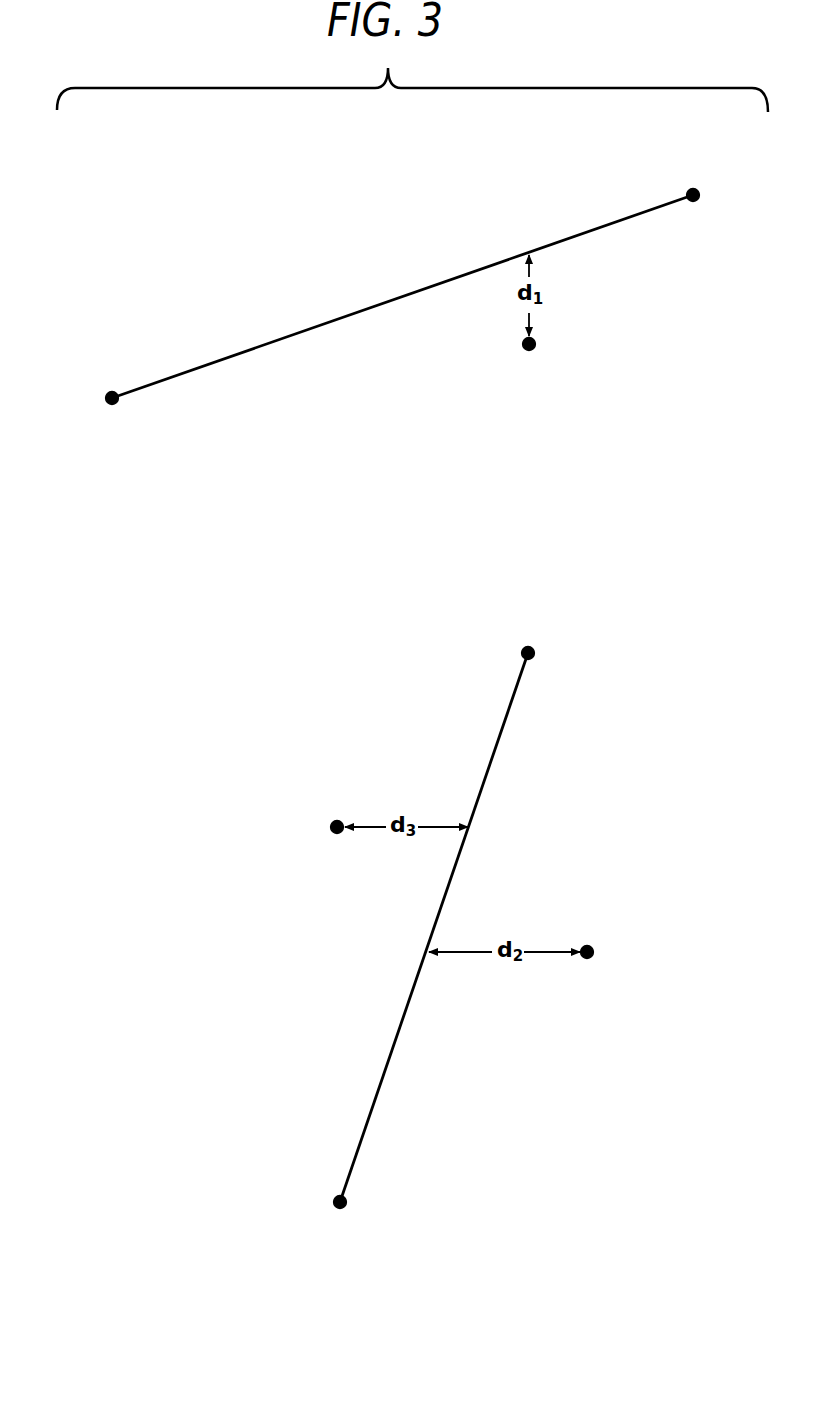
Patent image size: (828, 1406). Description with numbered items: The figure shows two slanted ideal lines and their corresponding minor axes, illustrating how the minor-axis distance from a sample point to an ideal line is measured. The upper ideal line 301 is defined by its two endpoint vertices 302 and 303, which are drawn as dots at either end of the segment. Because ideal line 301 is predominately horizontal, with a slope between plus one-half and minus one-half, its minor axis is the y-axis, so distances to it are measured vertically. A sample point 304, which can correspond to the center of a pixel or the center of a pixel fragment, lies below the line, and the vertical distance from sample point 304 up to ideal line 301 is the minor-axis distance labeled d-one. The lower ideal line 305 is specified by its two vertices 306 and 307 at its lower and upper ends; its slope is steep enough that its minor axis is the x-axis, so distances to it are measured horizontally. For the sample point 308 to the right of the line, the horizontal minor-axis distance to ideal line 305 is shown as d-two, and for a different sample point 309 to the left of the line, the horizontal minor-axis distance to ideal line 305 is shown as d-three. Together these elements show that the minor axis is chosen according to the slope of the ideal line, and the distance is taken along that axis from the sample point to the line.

The ideal line 301 is at (336, 319).
The vertex 302 is at (105, 398).
The vertex 303 is at (697, 190).
The sample point 304 is at (529, 351).
The ideal line 305 is at (388, 1062).
The vertex 306 is at (343, 1210).
The vertex 307 is at (528, 647).
The sample point 308 is at (592, 949).
The sample point 309 is at (333, 826).